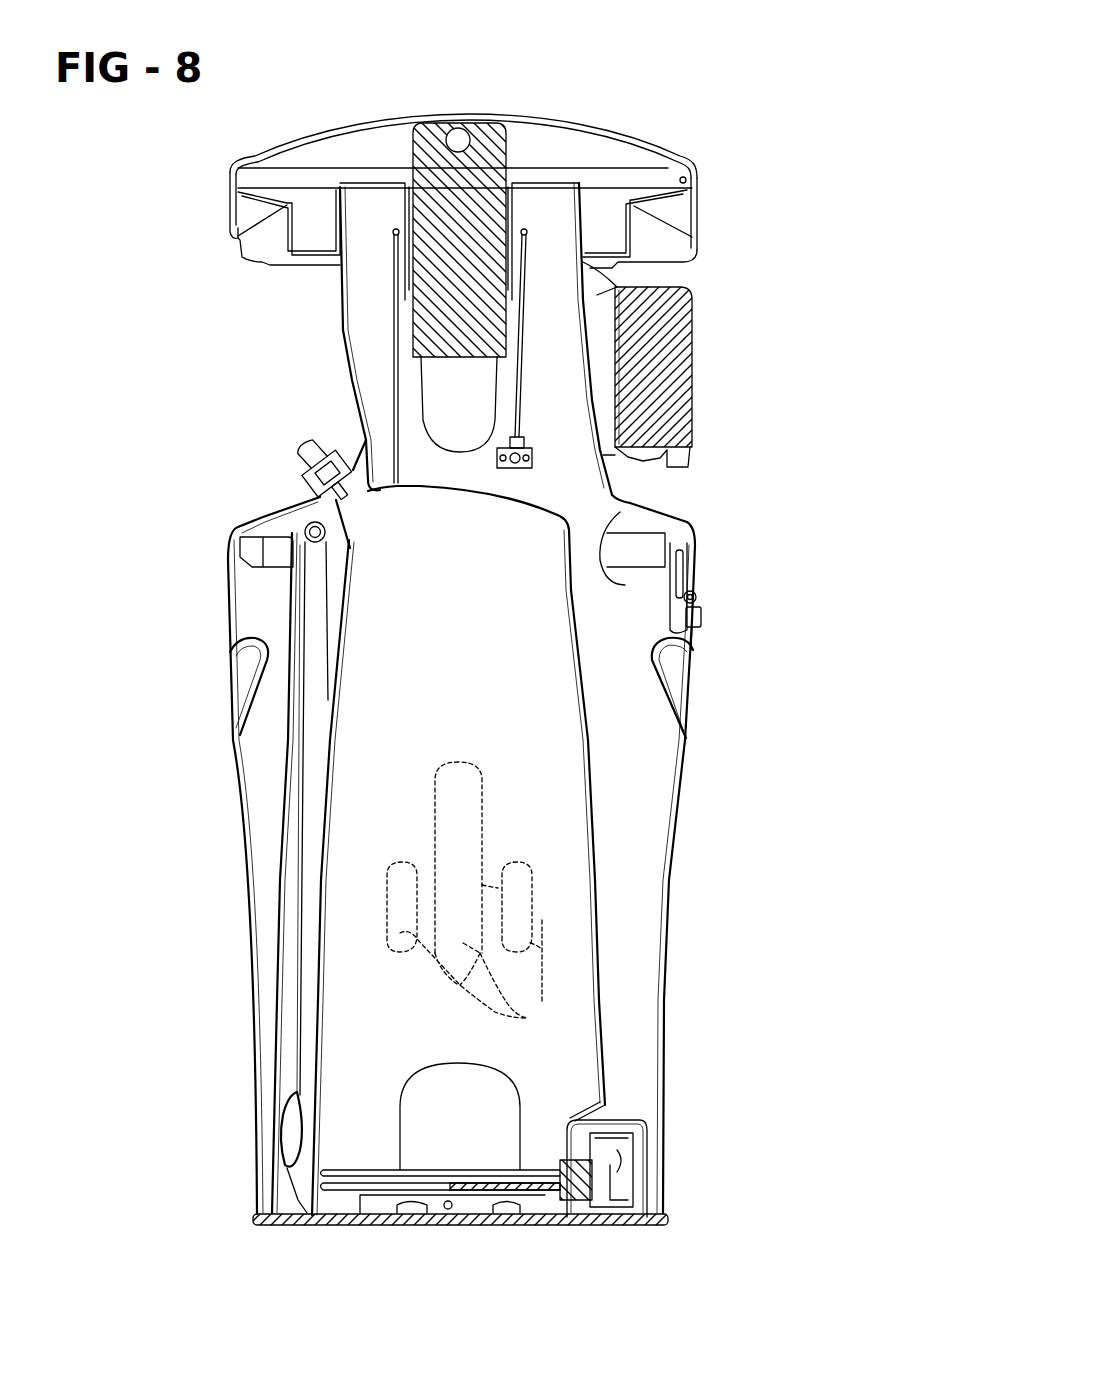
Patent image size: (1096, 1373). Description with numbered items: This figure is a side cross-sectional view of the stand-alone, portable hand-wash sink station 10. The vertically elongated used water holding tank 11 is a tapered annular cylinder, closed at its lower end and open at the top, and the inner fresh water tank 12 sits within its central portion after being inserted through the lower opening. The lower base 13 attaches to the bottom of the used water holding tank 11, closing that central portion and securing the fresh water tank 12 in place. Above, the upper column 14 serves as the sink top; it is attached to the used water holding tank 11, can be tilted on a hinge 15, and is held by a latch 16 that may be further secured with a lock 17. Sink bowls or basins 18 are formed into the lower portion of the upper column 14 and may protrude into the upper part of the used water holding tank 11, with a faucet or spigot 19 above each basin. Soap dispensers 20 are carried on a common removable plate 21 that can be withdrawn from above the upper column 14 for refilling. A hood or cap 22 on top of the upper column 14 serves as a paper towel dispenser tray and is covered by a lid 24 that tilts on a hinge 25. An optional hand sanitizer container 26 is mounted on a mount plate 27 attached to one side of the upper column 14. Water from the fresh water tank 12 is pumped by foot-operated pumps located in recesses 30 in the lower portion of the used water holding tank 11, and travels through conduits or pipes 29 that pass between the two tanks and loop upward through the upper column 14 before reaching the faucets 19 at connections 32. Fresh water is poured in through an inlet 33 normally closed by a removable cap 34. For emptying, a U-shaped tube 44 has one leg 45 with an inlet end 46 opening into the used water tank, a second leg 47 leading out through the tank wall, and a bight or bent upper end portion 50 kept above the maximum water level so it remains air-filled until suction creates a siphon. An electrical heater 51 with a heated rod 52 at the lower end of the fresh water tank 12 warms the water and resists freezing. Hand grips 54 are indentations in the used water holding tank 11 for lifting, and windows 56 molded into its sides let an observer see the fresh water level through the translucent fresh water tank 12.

The hand-wash sink station 10 is at (704, 37).
The used water holding tank 11 is at (672, 878).
The fresh water tank 12 is at (570, 915).
The lower base 13 is at (328, 1228).
The upper column 14 is at (345, 335).
The hinge 15 is at (252, 552).
The latch 16 is at (690, 566).
The lock 17 is at (702, 617).
The sink bowl or basin 18 is at (615, 520).
The faucet or spigot 19 is at (528, 460).
The soap dispenser 20 is at (425, 406).
The removable plate 21 is at (502, 152).
The hood or cap 22 is at (692, 226).
The lid 24 is at (610, 135).
The hinge 25 is at (692, 180).
The hand sanitizer container 26 is at (695, 375).
The mount plate 27 is at (603, 280).
The conduit or pipe 29 is at (393, 288).
The recess 30 is at (405, 1106).
The connection 32 is at (525, 433).
The inlet 33 is at (305, 475).
The removable cap 34 is at (295, 456).
The U-shaped tube 44 is at (312, 768).
The leg 45 is at (292, 1180).
The inlet end 46 is at (292, 1140).
The second leg 47 is at (302, 840).
The bight or bent upper end portion 50 is at (300, 488).
The electrical heater 51 is at (612, 1175).
The heated rod 52 is at (363, 1228).
The hand grip 54 is at (252, 650).
The sealed opening or window 56 is at (445, 1078).